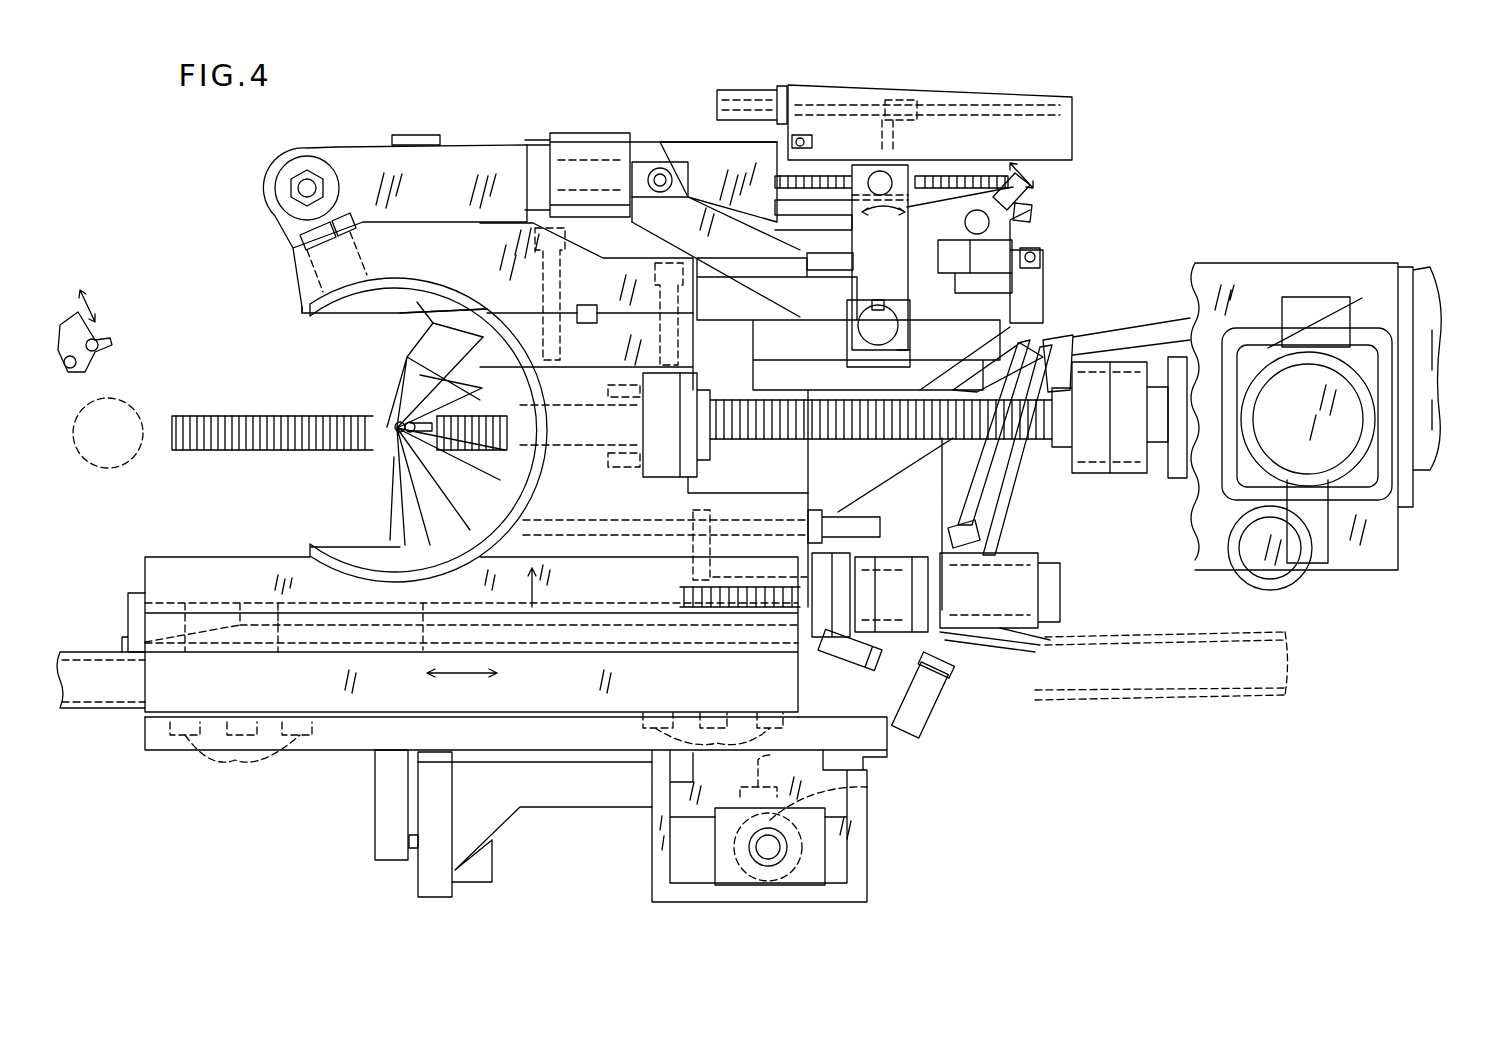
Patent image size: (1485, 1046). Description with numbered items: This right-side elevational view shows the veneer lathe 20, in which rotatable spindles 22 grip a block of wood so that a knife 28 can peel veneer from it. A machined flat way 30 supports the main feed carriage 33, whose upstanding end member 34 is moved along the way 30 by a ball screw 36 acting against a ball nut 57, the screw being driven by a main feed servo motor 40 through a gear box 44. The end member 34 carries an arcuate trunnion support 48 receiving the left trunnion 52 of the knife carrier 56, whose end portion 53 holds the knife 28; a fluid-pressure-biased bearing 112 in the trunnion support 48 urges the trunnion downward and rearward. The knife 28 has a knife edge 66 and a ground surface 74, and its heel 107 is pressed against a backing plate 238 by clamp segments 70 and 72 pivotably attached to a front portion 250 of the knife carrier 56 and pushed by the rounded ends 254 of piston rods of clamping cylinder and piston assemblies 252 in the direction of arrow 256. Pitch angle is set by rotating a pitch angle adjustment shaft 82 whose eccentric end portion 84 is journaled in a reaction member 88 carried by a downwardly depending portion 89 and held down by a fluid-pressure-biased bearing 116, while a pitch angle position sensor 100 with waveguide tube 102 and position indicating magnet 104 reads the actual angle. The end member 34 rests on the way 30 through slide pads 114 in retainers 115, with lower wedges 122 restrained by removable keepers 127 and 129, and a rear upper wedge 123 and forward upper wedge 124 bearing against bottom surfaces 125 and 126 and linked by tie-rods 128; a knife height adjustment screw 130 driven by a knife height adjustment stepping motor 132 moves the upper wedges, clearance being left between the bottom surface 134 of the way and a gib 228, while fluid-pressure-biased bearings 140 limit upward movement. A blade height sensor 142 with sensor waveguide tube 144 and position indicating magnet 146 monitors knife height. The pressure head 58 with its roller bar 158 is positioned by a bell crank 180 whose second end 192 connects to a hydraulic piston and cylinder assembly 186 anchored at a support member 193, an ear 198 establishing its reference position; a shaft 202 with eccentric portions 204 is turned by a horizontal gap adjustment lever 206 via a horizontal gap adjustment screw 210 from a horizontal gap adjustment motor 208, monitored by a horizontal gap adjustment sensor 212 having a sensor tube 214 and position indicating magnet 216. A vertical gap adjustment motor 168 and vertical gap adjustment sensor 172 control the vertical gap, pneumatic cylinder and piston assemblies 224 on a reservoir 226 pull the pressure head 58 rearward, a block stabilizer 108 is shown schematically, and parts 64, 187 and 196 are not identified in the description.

The veneer lathe 20 is at (248, 152).
The support member 193 is at (308, 180).
The hydraulic piston and cylinder assembly 186 is at (415, 134).
The horizontal gap adjustment motor 208 is at (592, 134).
The horizontal gap adjustment sensor 212 is at (745, 92).
The horizontal gap adjustment sensor tube 214 is at (840, 104).
The horizontal gap adjustment position indicating magnet 216 is at (910, 100).
The horizontal gap adjustment screw 210 is at (940, 175).
The second end of bell crank 192 is at (1015, 195).
The ear 198 is at (1003, 245).
The pin 187 is at (1042, 257).
The frame member 196 is at (1022, 285).
The pneumatic cylinder and piston assembly 224 is at (1150, 333).
The bell crank 180 is at (921, 234).
The horizontal gap adjustment lever 206 is at (868, 248).
The eccentric portion 204 is at (866, 318).
The shaft 202 is at (860, 336).
The fluid-pressure-biased bearing 112 is at (300, 270).
The arcuate trunnion support 48 is at (398, 262).
The pressure head 58 is at (478, 300).
The left trunnion 52 is at (403, 313).
The end member 34 is at (586, 360).
The ball screw 36 is at (237, 412).
The roller bar 158 is at (393, 420).
The knife edge 66 is at (370, 440).
The ground surface 74 is at (380, 440).
The knife 28 is at (387, 479).
The clamp segment 72 is at (400, 490).
The arm 64 is at (433, 487).
The heel 107 is at (393, 507).
The clamp segment 70 is at (400, 528).
The block stabilizer 108 is at (105, 333).
The rotatable spindles 22 is at (135, 408).
The backing plate 238 is at (515, 508).
The sensor waveguide tube 144 is at (607, 520).
The ball nut 57 is at (668, 453).
The end portion of knife carrier 53 is at (823, 475).
The blade height sensor 142 is at (872, 520).
The position sensor waveguide tube 102 is at (982, 493).
The position indicating magnet 104 is at (988, 530).
The main feed servo motor 40 is at (1284, 421).
The gear box 44 is at (1185, 480).
The reservoir 226 is at (1425, 490).
The removable keeper 127 is at (128, 590).
The main feed carriage 33 is at (190, 556).
The forward upper wedge 124 is at (195, 603).
The way 30 is at (80, 650).
The rear upper wedge 123 is at (680, 577).
The knife height adjustment screw 130 is at (680, 592).
The position indicating magnet 146 is at (712, 550).
The knife height adjustment stepping motor 132 is at (1035, 595).
The horizontal bottom surface 126 is at (185, 652).
The slide pads 114 is at (240, 652).
The retainer 115 is at (278, 652).
The lower wedge 122 is at (305, 642).
The tie-rods 128 is at (440, 655).
The horizontal bottom surface 125 is at (605, 648).
The removable keeper 129 is at (800, 640).
The vertical gap adjustment sensor 172 is at (855, 665).
The vertical gap adjustment motor 168 is at (1010, 648).
The pitch angle position sensor 100 is at (932, 712).
The bottom surface of way 134 is at (1075, 700).
The fluid-pressure-biased bearings 140 is at (228, 762).
The gib 228 is at (340, 750).
The front portion of knife carrier 250 is at (440, 805).
The knife carrier 56 is at (570, 800).
The arrow 256 is at (392, 848).
The rounded end 254 is at (410, 852).
The clamping cylinder and piston assemblies 252 is at (478, 870).
The fluid-pressure-biased bearing 116 is at (768, 757).
The downwardly depending portion 89 is at (860, 765).
The pitch angle adjustment shaft 82 is at (870, 788).
The eccentric end portion 84 is at (770, 847).
The reaction member 88 is at (815, 858).